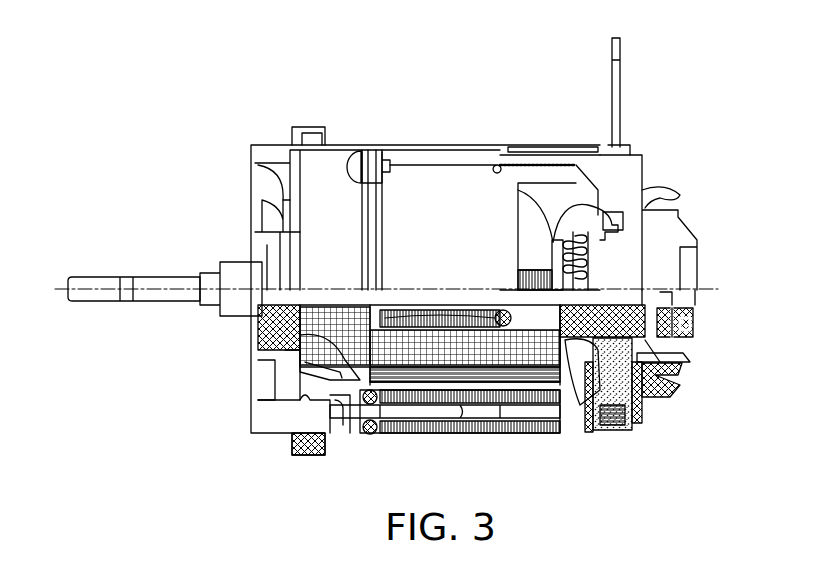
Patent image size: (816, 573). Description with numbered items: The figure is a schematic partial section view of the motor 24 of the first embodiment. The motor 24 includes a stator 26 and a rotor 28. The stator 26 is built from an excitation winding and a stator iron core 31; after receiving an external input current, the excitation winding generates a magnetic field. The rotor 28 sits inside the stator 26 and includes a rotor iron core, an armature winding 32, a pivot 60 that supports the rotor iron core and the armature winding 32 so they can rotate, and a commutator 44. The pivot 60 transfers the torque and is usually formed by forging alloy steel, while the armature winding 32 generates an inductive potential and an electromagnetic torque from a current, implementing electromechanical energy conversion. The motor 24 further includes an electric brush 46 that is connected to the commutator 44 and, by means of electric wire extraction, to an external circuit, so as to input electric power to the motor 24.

The motor 24 is at (411, 64).
The stator 26 is at (402, 451).
The rotor 28 is at (564, 375).
The stator iron core 31 is at (472, 432).
The armature winding 32 is at (313, 343).
The commutator 44 is at (650, 337).
The electric brush 46 is at (640, 403).
The pivot 60 is at (157, 284).